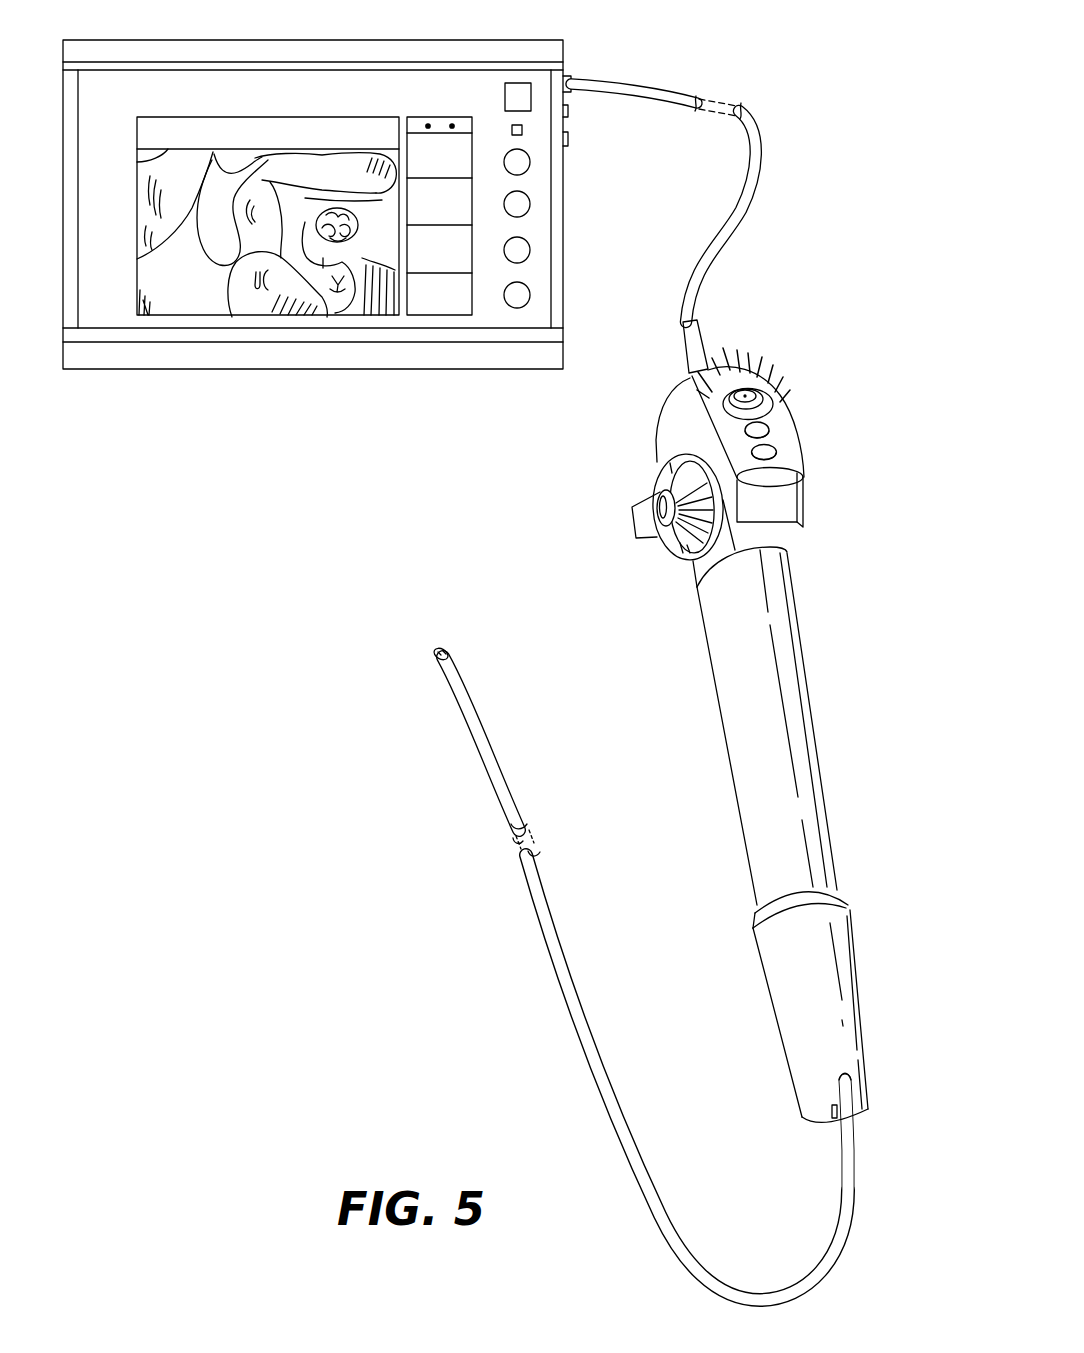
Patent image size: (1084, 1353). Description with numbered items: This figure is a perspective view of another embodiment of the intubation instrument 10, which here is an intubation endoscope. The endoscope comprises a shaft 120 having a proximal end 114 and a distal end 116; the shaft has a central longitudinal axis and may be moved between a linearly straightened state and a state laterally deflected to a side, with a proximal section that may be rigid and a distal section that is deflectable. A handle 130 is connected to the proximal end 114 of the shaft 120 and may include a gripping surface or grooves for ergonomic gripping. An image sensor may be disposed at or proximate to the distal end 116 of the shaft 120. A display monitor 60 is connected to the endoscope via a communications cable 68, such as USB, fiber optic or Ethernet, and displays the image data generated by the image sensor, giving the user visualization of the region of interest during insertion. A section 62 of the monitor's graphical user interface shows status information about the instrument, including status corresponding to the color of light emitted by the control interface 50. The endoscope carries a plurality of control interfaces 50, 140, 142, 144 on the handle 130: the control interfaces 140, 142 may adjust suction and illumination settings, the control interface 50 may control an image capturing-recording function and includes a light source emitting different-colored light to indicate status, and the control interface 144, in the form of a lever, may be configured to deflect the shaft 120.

The intubation instrument 10 is at (657, 824).
The control interface 50 is at (770, 410).
The display monitor 60 is at (317, 184).
The section of the monitor's graphical user interface 62 is at (137, 166).
The communications cable 68 is at (757, 148).
The proximal end 114 is at (872, 1213).
The distal end 116 is at (470, 756).
The shaft 120 is at (583, 1020).
The handle 130 is at (730, 735).
The control interface 140 is at (770, 428).
The control interface 142 is at (775, 448).
The control interface 144 is at (633, 528).